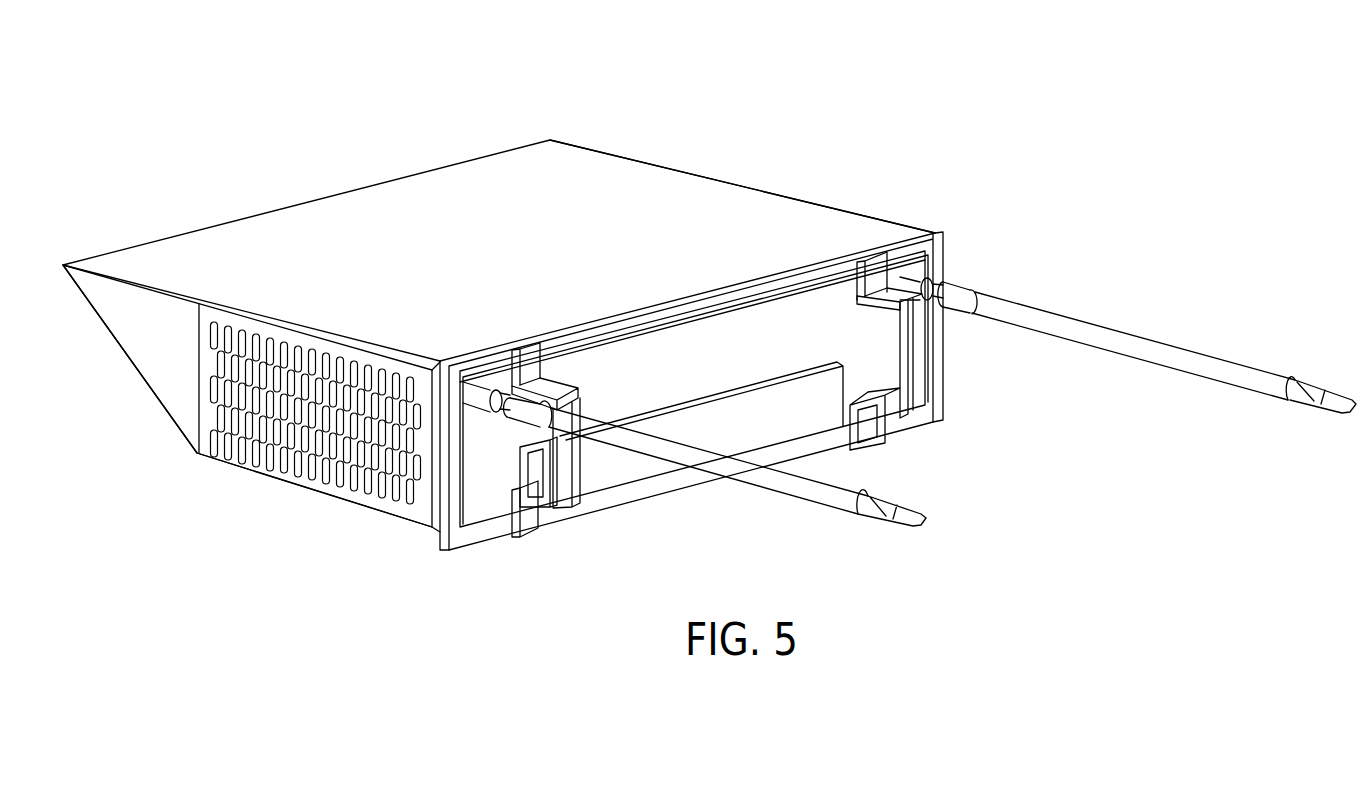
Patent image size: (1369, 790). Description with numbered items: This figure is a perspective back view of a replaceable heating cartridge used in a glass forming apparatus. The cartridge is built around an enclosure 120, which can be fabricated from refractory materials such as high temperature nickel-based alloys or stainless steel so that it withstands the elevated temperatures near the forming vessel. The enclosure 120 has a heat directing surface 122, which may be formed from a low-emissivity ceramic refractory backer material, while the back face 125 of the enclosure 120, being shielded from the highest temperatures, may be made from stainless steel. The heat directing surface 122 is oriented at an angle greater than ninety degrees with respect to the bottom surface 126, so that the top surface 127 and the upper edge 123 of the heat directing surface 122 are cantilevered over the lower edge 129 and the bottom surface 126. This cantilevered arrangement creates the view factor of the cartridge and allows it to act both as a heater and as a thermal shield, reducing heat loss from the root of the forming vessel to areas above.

The enclosure 120 is at (797, 160).
The top surface 127 is at (388, 213).
The upper edge 123 is at (127, 317).
The heat directing surface 122 is at (112, 341).
The lower edge 129 is at (160, 418).
The bottom surface 126 is at (198, 458).
The back face 125 is at (870, 368).